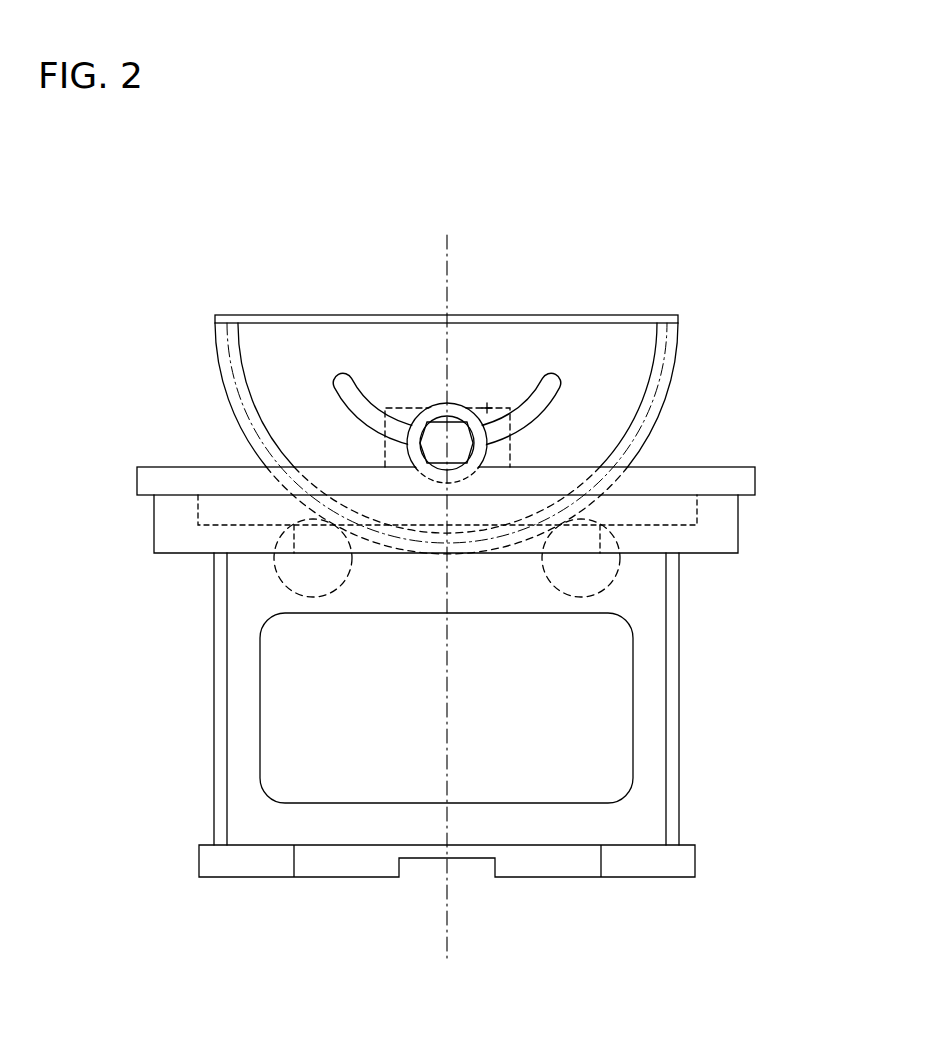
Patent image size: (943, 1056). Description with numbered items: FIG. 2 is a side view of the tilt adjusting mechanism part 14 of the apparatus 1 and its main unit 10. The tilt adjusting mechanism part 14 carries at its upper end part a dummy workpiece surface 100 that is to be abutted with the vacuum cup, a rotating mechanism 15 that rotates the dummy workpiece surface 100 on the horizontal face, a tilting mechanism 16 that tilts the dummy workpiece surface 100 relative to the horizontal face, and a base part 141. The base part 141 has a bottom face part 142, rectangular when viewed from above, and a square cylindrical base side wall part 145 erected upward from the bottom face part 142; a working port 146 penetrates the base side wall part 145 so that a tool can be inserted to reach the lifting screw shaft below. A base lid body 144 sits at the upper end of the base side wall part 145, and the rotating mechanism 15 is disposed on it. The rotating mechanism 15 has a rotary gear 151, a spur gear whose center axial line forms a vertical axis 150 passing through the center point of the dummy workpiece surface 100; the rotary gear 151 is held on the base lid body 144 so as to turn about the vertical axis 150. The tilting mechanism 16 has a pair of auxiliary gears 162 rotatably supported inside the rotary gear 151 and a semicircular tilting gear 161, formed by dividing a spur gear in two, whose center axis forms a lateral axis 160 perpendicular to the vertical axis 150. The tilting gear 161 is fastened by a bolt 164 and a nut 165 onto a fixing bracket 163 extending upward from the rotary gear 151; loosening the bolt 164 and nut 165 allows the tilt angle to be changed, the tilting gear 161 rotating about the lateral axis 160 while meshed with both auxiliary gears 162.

The apparatus 1 is at (731, 138).
The main unit 10 is at (730, 185).
The tilt adjusting mechanism part 14 is at (731, 240).
The rotating mechanism 15 is at (763, 453).
The tilting mechanism 16 is at (688, 364).
The dummy workpiece surface 100 is at (600, 317).
The base part 141 is at (700, 676).
The bottom face part 142 is at (220, 863).
The base lid body 144 is at (173, 525).
The base side wall part 145 is at (222, 708).
The working port 146 is at (262, 777).
The vertical axis 150 is at (445, 918).
The rotary gear 151 is at (154, 478).
The lateral axis 160 is at (447, 316).
The tilting gear 161 is at (625, 400).
The auxiliary gears 162 is at (305, 571).
The fixing bracket 163 is at (487, 405).
The bolt 164 is at (374, 326).
The nut 165 is at (437, 438).